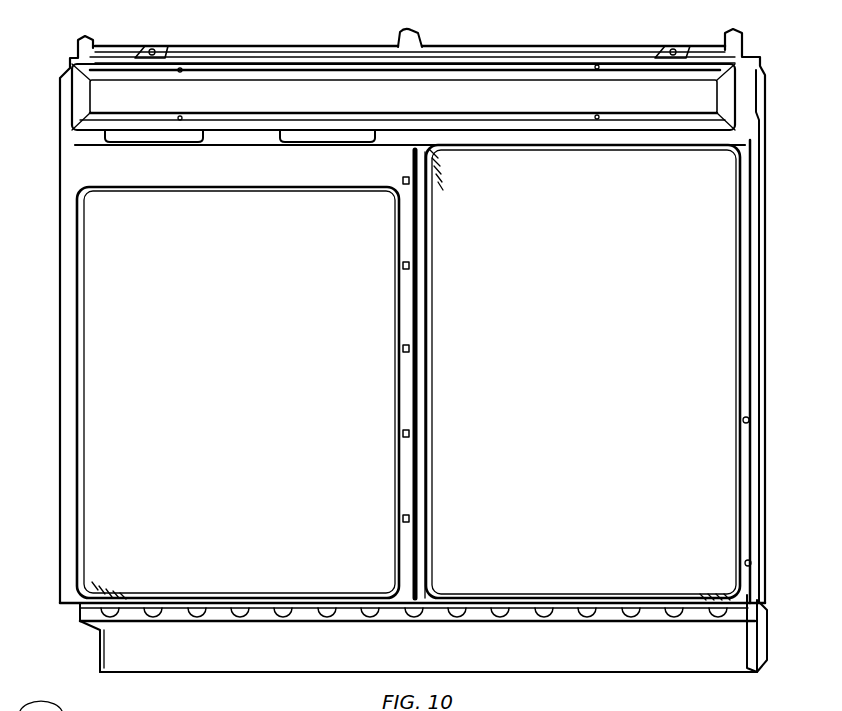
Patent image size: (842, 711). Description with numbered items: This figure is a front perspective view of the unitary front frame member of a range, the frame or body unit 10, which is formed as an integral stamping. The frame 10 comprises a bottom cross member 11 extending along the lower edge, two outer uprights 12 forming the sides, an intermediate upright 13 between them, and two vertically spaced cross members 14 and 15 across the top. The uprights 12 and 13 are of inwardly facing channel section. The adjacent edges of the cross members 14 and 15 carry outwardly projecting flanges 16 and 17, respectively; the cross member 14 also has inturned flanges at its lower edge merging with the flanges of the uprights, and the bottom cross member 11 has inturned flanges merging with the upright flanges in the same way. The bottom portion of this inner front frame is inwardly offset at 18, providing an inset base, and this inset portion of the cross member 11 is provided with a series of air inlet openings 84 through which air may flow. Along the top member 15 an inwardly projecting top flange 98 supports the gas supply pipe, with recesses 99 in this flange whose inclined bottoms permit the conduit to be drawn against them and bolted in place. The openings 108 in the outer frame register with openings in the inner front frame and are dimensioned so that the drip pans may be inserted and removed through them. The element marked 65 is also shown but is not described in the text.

The frame or body unit 10 is at (765, 357).
The bottom cross member 11 is at (582, 662).
The outer uprights 12 is at (68, 318).
The intermediate upright 13 is at (424, 305).
The cross member 14 is at (537, 133).
The cross member 15 is at (518, 48).
The outwardly projecting flange 16 is at (498, 118).
The outwardly projecting flange 17 is at (560, 62).
The inwardly offset portion 18 is at (762, 636).
The hinge 65 is at (156, 705).
The air inlet openings 84 is at (248, 621).
The inwardly projecting top flange 98 is at (626, 46).
The recesses 99 is at (152, 47).
The registering openings 108 is at (158, 143).